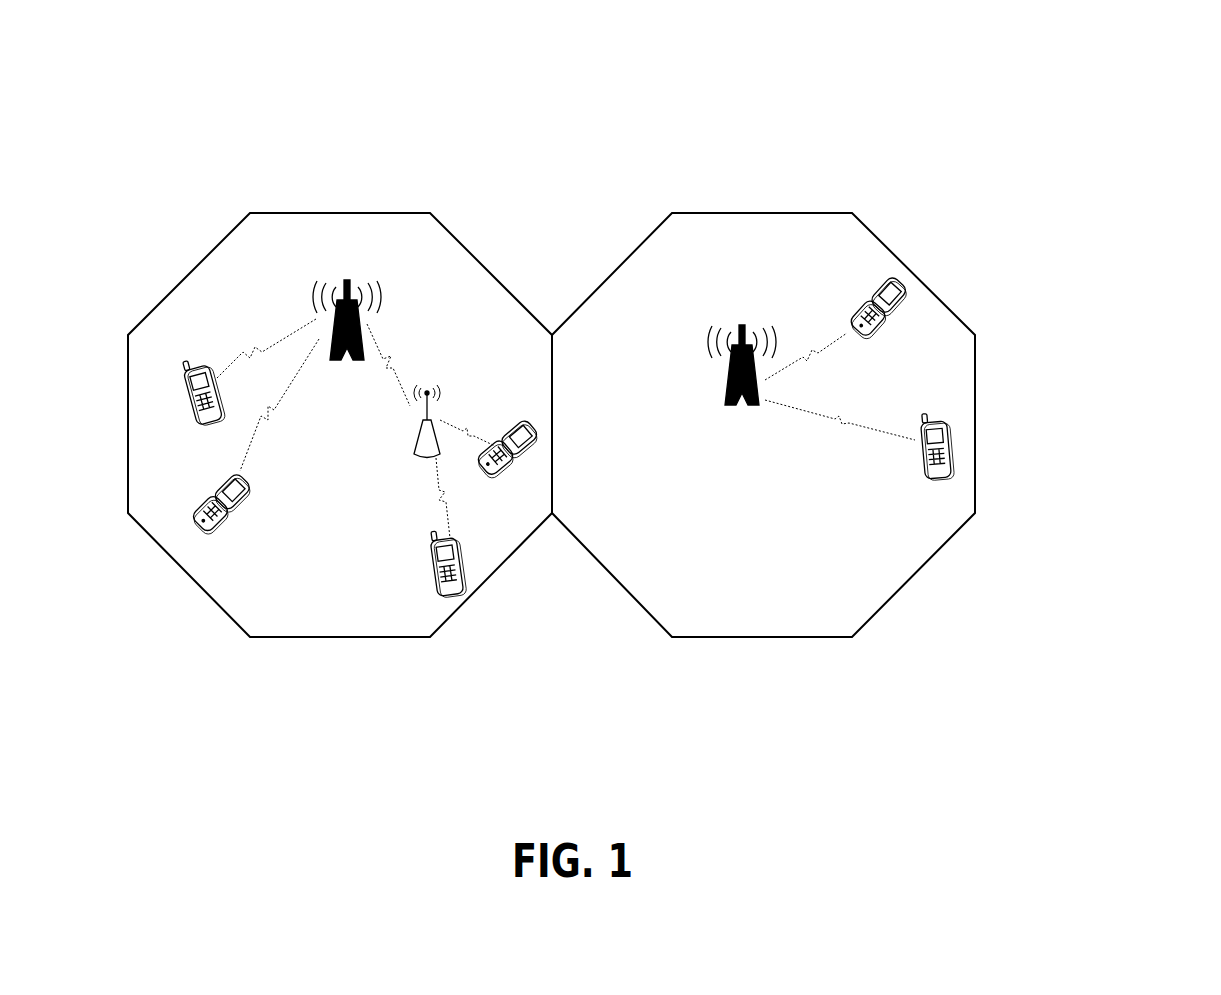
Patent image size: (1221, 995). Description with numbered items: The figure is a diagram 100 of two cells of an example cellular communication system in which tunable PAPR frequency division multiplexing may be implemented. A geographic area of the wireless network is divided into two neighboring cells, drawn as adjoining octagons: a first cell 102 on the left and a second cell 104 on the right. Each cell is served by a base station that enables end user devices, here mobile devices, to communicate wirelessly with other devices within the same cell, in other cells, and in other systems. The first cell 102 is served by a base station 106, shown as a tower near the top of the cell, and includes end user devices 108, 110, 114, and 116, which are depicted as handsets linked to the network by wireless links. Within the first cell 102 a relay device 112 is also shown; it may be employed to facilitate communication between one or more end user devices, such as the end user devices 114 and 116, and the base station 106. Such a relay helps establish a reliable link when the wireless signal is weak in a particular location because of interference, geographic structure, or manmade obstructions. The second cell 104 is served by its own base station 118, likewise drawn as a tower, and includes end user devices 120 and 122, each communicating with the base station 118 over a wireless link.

The diagram 100 is at (1063, 78).
The cell 1 102 is at (373, 501).
The cell 2 104 is at (781, 556).
The base station 106 is at (318, 280).
The end user device 108 is at (165, 375).
The end user device 110 is at (194, 540).
The relay device 112 is at (440, 386).
The end user device 114 is at (532, 414).
The end user device 116 is at (426, 588).
The base station 118 is at (715, 324).
The end user device 120 is at (890, 262).
The end user device 122 is at (959, 430).